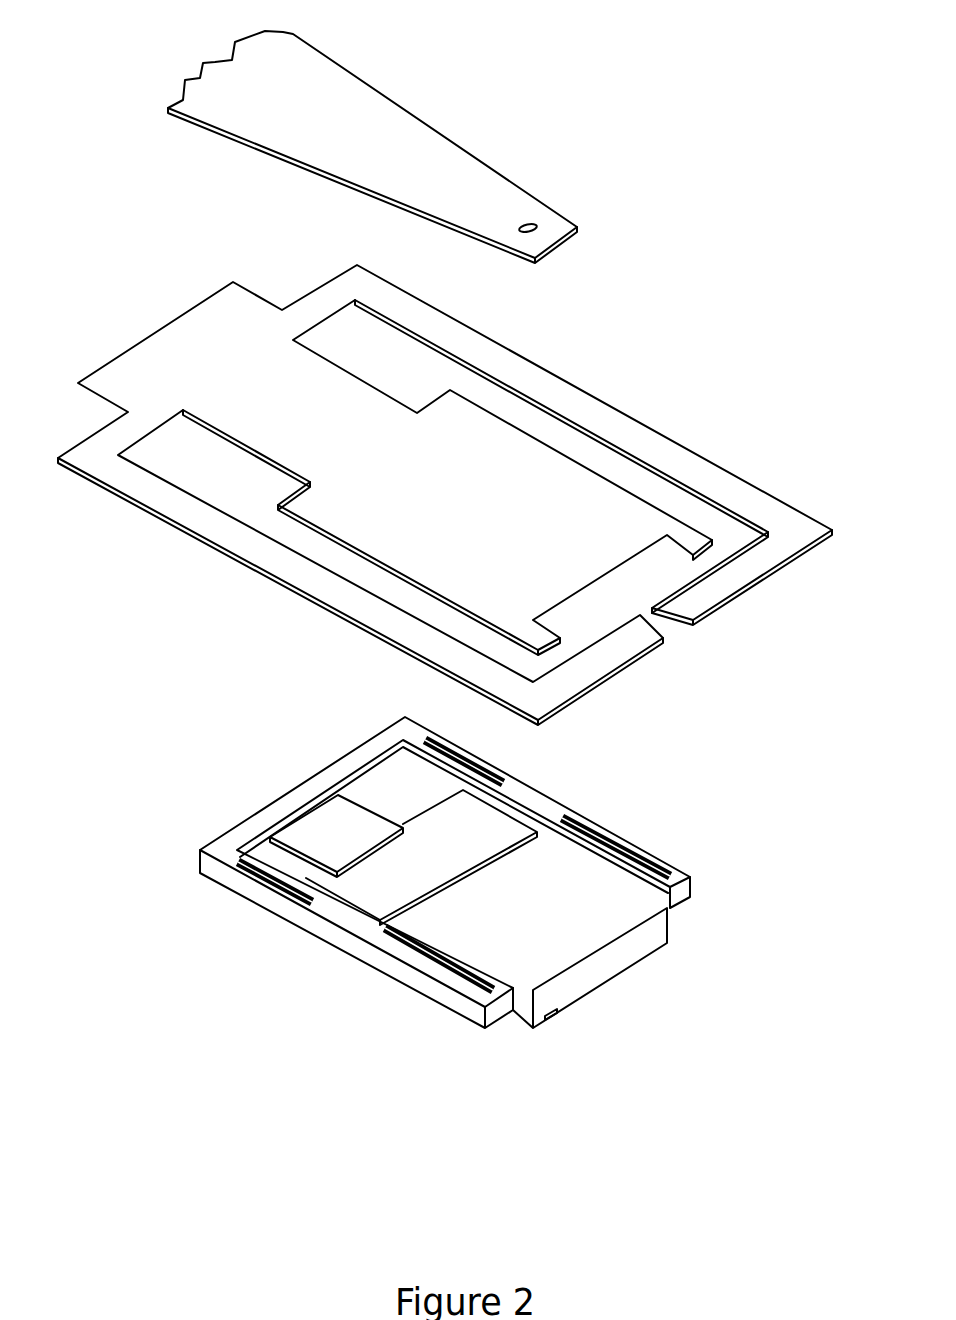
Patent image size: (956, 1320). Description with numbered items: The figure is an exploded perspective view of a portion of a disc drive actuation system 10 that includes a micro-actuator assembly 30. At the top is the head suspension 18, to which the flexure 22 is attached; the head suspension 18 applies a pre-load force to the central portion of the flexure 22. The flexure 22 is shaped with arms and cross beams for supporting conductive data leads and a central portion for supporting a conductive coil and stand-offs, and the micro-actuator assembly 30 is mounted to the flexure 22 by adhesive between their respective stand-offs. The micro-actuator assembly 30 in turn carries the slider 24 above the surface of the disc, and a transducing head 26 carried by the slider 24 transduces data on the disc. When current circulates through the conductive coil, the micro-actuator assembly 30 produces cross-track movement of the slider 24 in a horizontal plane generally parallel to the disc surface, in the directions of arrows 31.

The disc drive actuation system 10 is at (745, 1010).
The head suspension 18 is at (393, 143).
The flexure 22 is at (598, 396).
The slider 24 is at (650, 955).
The transducing head 26 is at (553, 1012).
The micro-actuator assembly 30 is at (548, 788).
The arrows 31 is at (700, 975).